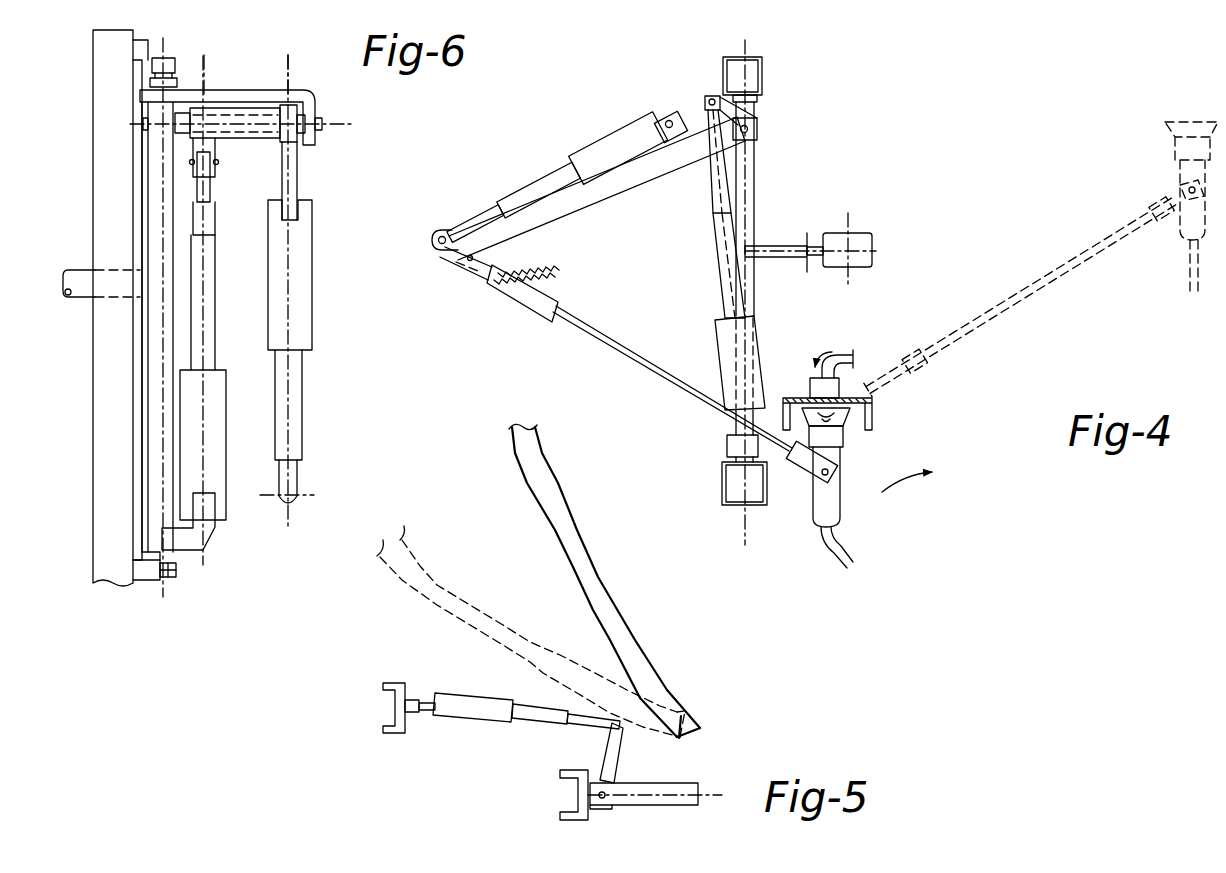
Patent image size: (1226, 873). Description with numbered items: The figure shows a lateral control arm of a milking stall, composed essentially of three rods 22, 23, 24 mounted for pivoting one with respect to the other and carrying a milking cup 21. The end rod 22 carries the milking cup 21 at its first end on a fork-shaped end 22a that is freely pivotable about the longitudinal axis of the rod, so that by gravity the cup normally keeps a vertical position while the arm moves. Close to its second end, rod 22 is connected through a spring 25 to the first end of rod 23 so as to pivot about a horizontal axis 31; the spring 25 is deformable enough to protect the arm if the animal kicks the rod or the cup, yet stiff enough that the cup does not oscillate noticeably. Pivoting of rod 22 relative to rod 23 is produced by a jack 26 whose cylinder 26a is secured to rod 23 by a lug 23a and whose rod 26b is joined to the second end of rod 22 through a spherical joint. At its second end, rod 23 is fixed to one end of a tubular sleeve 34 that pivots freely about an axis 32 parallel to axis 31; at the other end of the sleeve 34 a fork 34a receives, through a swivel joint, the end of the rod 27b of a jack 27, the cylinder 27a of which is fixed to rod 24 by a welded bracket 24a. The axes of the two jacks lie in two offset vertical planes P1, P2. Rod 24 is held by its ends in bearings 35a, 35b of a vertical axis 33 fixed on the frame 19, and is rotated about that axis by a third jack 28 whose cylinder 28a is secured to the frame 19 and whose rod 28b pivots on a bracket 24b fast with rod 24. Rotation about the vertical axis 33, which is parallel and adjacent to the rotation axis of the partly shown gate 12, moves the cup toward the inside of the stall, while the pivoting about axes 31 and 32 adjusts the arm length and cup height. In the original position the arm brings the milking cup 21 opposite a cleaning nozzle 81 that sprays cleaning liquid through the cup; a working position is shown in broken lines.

In FIG. 4, the gate 12 is at (1041, 259).
In FIG. 5, the gate 12 is at (560, 532).
In FIG. 6, the frame 19 is at (93, 212).
In FIG. 4, the frame 19 is at (762, 70).
In FIG. 5, the frame 19 is at (395, 735).
In FIG. 4, the milking cup 21 is at (830, 456).
In FIG. 4, the end rod 22 is at (648, 360).
In FIG. 4, the fork-shaped end 22a is at (803, 468).
In FIG. 4, the rod 23 is at (620, 194).
In FIG. 4, the lug 23a is at (686, 129).
In FIG. 6, the rod 24 is at (147, 386).
In FIG. 4, the rod 24 is at (757, 186).
In FIG. 5, the rod 24 is at (684, 787).
In FIG. 6, the bracket 24a is at (195, 538).
In FIG. 4, the bracket 24b is at (775, 258).
In FIG. 5, the bracket 24b is at (617, 770).
In FIG. 4, the spring 25 is at (532, 310).
In FIG. 6, the jack 26 is at (312, 305).
In FIG. 4, the jack 26 is at (555, 168).
In FIG. 4, the cylinder 26a is at (613, 138).
In FIG. 4, the rod 26b is at (465, 227).
In FIG. 6, the jack 27 is at (220, 305).
In FIG. 4, the jack 27 is at (714, 285).
In FIG. 6, the cylinder 27a is at (222, 422).
In FIG. 4, the cylinder 27a is at (756, 350).
In FIG. 6, the rod 27b is at (215, 223).
In FIG. 4, the rod 27b is at (713, 182).
In FIG. 4, the third jack 28 is at (860, 232).
In FIG. 5, the third jack 28 is at (542, 728).
In FIG. 5, the cylinder 28a is at (458, 712).
In FIG. 6, the rod 28b is at (78, 302).
In FIG. 5, the rod 28b is at (585, 722).
In FIG. 6, the horizontal axis 31 is at (312, 497).
In FIG. 4, the horizontal axis 31 is at (472, 265).
In FIG. 6, the axis 32 is at (332, 123).
In FIG. 4, the axis 32 is at (760, 130).
In FIG. 6, the vertical axis 33 is at (162, 442).
In FIG. 4, the vertical axis 33 is at (746, 527).
In FIG. 5, the vertical axis 33 is at (571, 797).
In FIG. 6, the tubular sleeve 34 is at (243, 138).
In FIG. 6, the fork 34a is at (212, 170).
In FIG. 6, the bearing 35a is at (178, 576).
In FIG. 6, the bearing 35b is at (182, 67).
In FIG. 4, the nozzle 81 is at (843, 388).
In FIG. 6, the vertical plane P1 is at (290, 70).
In FIG. 6, the vertical plane P2 is at (206, 72).